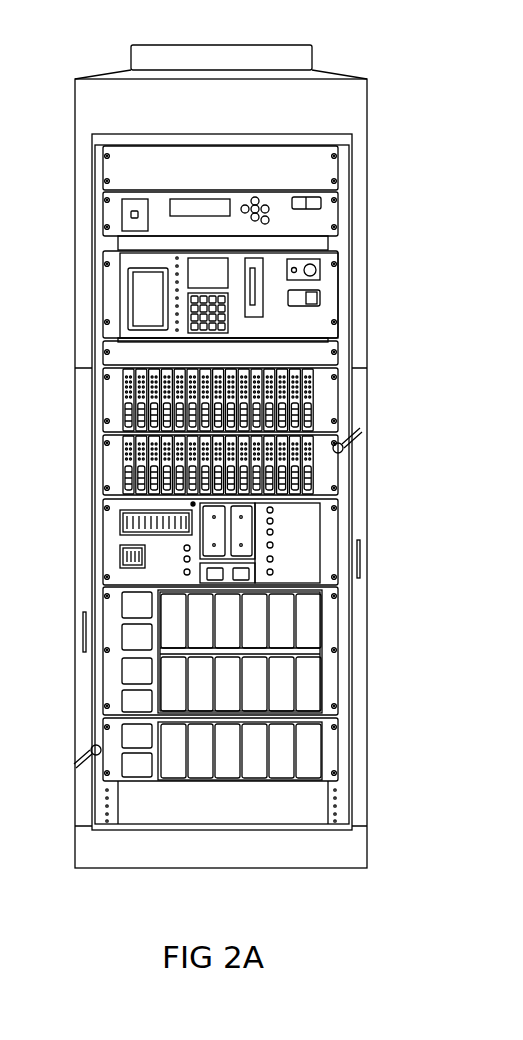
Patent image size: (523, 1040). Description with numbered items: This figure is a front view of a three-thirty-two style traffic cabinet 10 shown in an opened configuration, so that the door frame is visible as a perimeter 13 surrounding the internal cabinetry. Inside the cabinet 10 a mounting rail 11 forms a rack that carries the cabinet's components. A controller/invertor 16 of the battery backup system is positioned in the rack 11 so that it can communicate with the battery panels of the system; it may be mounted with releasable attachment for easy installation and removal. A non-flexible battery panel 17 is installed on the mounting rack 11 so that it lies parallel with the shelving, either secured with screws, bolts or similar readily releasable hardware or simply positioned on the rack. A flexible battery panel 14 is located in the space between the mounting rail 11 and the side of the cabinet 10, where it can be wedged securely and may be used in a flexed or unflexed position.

The traffic cabinet 10 is at (356, 112).
The mounting rail 11 is at (346, 239).
The perimeter 13 is at (350, 289).
The flexible battery panel 14 is at (87, 421).
The controller/invertor 16 is at (220, 214).
The non-flexible battery panel 17 is at (143, 169).